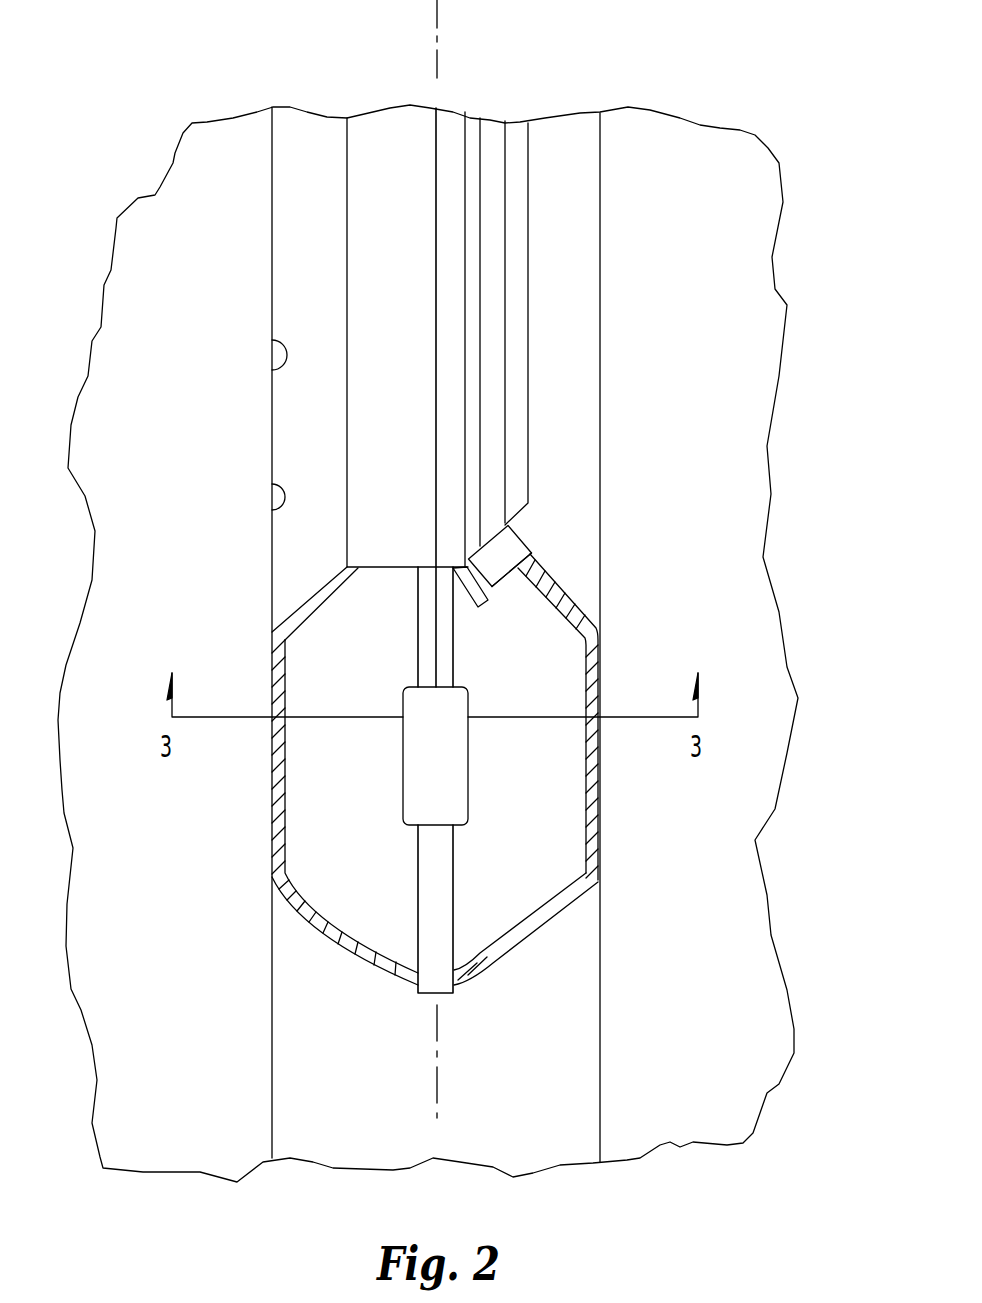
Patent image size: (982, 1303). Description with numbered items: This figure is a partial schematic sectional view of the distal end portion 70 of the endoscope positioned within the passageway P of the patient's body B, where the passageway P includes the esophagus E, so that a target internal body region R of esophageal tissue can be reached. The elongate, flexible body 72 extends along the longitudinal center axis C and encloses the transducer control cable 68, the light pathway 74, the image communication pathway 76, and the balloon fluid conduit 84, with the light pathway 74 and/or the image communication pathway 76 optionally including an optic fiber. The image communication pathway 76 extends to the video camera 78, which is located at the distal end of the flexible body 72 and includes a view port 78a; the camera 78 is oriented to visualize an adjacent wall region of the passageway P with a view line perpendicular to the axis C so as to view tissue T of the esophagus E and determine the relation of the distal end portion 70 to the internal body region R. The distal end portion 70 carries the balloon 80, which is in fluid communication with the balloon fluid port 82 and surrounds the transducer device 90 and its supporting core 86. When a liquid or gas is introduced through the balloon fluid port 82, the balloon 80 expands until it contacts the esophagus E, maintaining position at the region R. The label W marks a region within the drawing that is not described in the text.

The transducer control cable 68 is at (436, 270).
The distal end portion 70 is at (533, 950).
The flexible body 72 is at (528, 168).
The light pathway 74 is at (505, 242).
The image communication pathway 76 is at (480, 435).
The video camera 78 is at (518, 540).
The view port 78a is at (523, 562).
The balloon 80 is at (592, 880).
The balloon fluid port 82 is at (484, 606).
The balloon fluid conduit 84 is at (465, 298).
The supporting core 86 is at (418, 865).
The transducer 90 is at (468, 750).
The body B is at (272, 305).
The esophagus E is at (272, 370).
The passageway P is at (272, 485).
The longitudinal center axis C is at (437, 1093).
The wellbore region W is at (364, 703).
The tissue T is at (688, 533).
The internal body region R is at (634, 774).